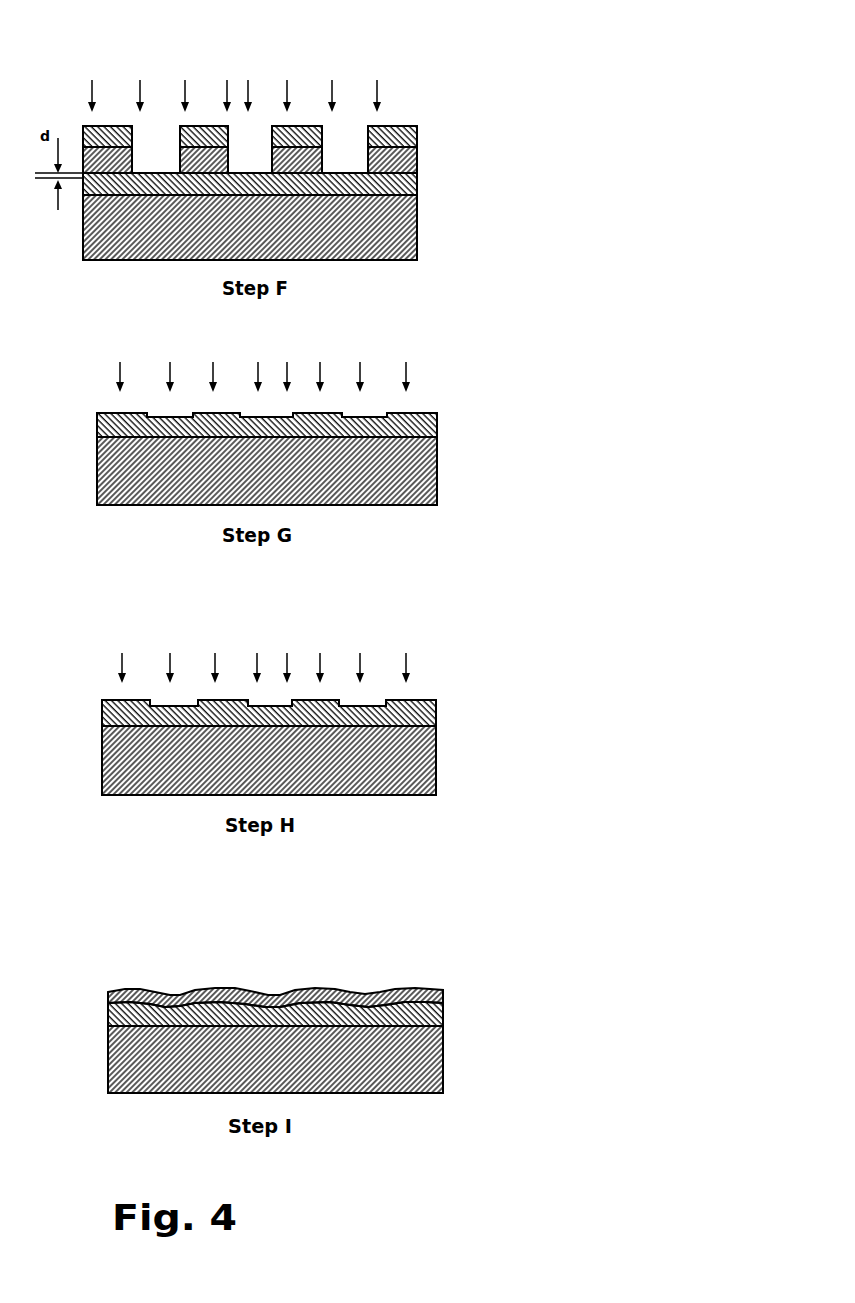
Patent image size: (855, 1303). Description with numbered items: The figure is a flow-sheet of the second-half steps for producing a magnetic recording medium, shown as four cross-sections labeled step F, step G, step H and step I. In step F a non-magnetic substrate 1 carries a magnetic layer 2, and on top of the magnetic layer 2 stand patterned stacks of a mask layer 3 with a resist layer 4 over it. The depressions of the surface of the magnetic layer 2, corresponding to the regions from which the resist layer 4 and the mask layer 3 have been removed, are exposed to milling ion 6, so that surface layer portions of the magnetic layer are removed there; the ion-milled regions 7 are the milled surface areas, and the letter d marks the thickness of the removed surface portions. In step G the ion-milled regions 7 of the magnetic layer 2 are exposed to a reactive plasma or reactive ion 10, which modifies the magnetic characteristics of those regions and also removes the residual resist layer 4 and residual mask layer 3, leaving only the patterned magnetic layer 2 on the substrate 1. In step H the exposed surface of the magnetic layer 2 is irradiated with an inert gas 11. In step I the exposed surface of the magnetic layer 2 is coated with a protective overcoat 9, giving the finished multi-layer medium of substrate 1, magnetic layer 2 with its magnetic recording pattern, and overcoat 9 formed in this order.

The non-magnetic substrate 1 is at (417, 226).
The magnetic layer 2 is at (417, 181).
The mask layer 3 is at (417, 156).
The resist layer 4 is at (417, 131).
The milling ion 6 is at (380, 83).
The ion-milled regions 7 is at (345, 172).
The overcoat 9 is at (443, 990).
The reactive plasma or reactive ion 10 is at (405, 367).
The inert gas 11 is at (405, 660).